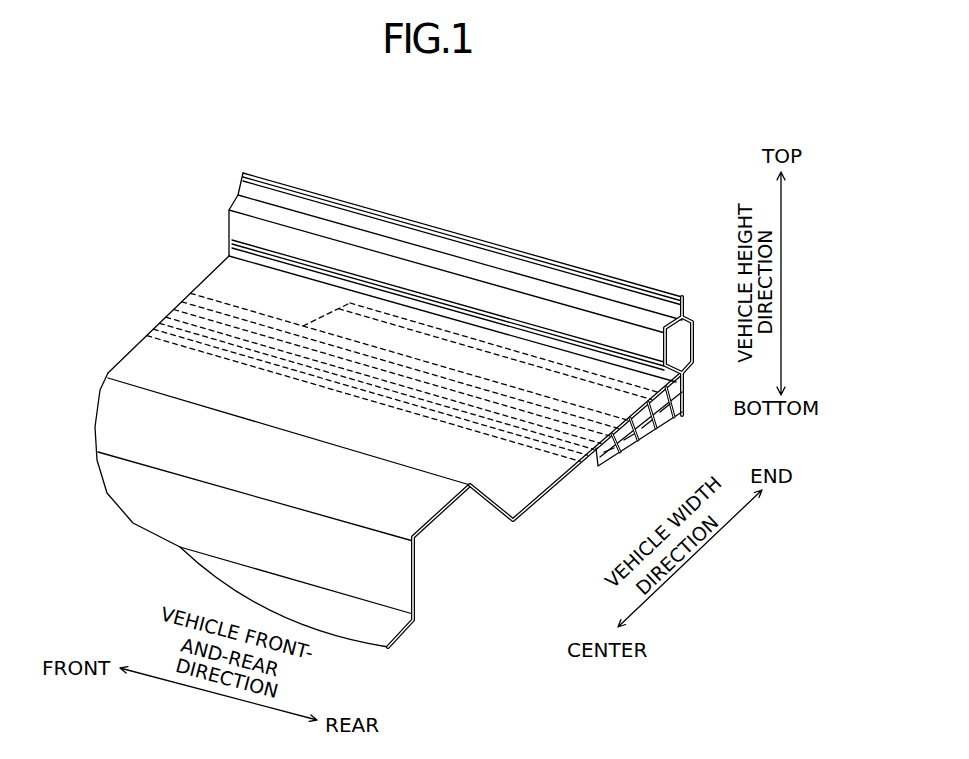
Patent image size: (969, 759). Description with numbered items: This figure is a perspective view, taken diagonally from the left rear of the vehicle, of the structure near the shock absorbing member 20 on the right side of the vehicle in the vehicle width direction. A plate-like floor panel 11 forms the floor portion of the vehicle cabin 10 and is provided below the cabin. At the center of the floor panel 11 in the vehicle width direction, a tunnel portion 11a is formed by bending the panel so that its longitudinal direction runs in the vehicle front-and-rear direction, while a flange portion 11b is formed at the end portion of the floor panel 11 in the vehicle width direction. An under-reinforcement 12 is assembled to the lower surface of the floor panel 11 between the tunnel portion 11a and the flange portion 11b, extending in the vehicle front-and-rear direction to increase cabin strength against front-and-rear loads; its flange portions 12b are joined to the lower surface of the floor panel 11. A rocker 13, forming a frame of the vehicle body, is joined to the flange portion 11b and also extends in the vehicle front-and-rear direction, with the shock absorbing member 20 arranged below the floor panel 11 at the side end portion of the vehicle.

The vehicle cabin 10 is at (149, 235).
The floor panel 11 is at (527, 490).
The tunnel portion 11a is at (430, 525).
The flange portion 11b is at (527, 338).
The under-reinforcement 12 is at (597, 457).
The flange portions 12b is at (557, 398).
The rocker 13 is at (611, 278).
The shock absorbing member 20 is at (657, 438).